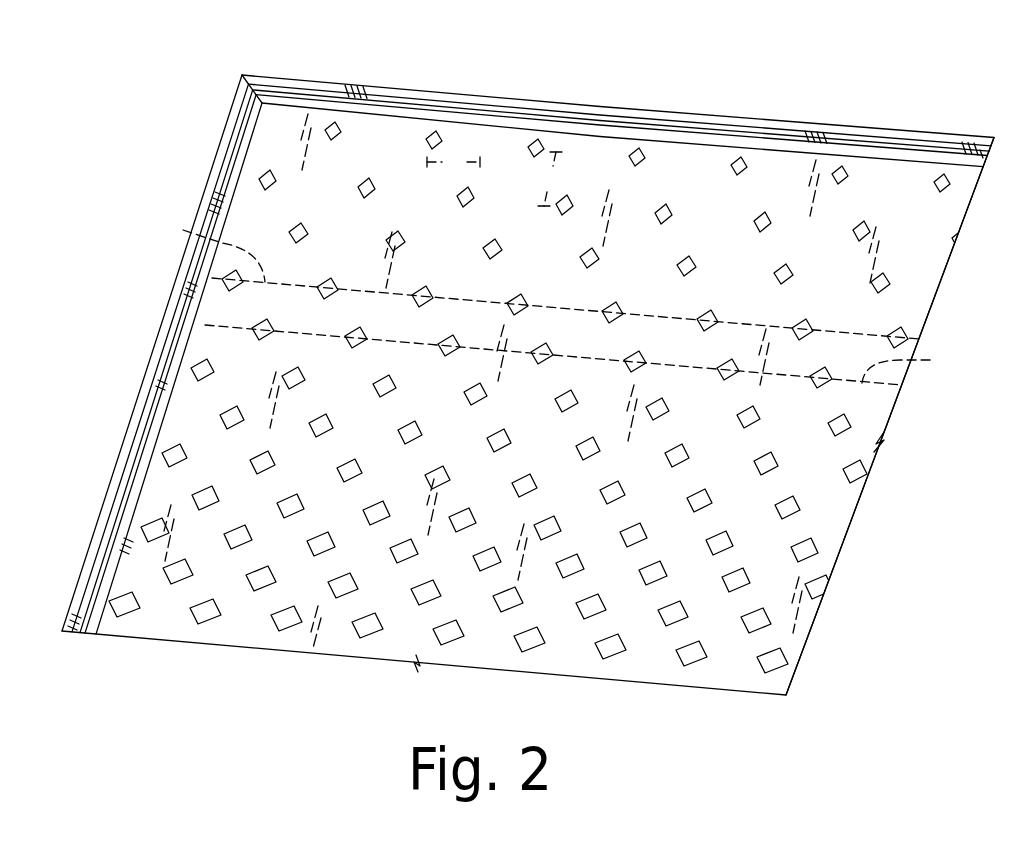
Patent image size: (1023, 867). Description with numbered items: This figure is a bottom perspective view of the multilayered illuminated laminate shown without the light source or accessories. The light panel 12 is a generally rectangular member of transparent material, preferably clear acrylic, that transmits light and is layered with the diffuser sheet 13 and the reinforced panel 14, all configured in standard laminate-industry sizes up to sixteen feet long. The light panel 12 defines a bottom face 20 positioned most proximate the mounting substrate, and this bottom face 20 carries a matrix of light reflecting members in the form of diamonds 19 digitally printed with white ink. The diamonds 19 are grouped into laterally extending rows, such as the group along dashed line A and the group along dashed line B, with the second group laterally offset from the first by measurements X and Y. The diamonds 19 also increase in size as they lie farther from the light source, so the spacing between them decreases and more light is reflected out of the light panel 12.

The light panel 12 is at (157, 620).
The diffuser sheet 13 is at (277, 92).
The reinforced panel 14 is at (927, 137).
The diamonds 19 is at (433, 135).
The bottom face 20 is at (952, 213).